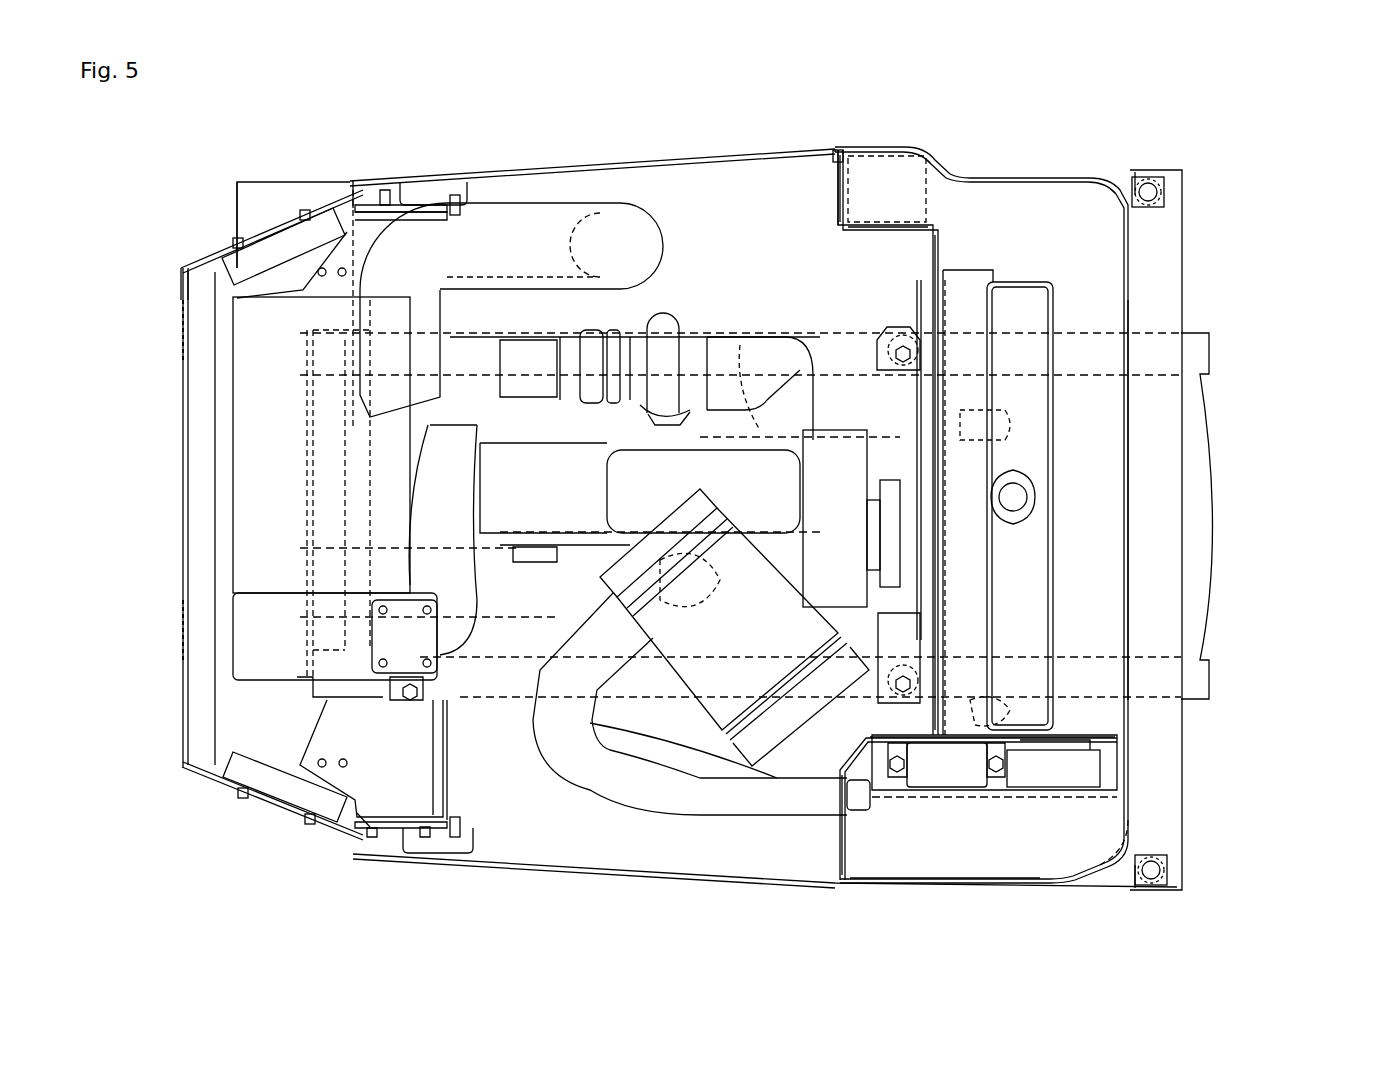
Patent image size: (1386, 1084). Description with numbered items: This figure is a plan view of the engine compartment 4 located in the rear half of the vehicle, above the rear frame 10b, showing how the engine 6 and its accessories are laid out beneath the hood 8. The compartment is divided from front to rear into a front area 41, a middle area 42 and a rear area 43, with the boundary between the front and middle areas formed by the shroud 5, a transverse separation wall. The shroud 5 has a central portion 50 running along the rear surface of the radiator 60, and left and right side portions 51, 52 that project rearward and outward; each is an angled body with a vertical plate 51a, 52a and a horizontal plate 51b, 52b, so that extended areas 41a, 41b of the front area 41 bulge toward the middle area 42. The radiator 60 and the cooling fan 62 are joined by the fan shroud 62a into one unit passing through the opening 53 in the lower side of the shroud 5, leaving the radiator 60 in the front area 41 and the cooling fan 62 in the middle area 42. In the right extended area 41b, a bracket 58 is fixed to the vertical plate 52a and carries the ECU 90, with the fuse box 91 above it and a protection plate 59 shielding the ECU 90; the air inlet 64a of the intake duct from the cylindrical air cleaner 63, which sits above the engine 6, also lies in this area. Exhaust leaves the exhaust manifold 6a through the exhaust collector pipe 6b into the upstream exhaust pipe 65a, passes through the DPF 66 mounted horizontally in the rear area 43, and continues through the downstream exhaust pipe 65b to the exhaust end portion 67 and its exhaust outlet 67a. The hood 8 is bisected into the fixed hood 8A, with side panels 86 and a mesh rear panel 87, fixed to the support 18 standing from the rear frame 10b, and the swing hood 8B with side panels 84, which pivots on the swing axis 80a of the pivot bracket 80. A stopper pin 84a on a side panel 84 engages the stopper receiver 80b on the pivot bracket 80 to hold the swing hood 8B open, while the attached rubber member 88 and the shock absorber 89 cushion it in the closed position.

The engine compartment 4 is at (683, 180).
The shroud 5 is at (960, 225).
The engine 6 is at (838, 430).
The exhaust manifold 6a is at (745, 350).
The exhaust collector pipe 6b is at (675, 320).
The hood 8 is at (940, 98).
The fixed hood 8A is at (178, 258).
The swing hood 8B is at (500, 165).
The rear frame 10b is at (1200, 310).
The support 18 is at (305, 510).
The front area 41 is at (1105, 487).
The extended area 41a is at (912, 200).
The extended area 41b is at (922, 861).
The middle area 42 is at (746, 200).
The rear area 43 is at (283, 735).
The central portion 50 is at (930, 293).
The left side portion 51 is at (836, 203).
The vertical plate 51a is at (878, 232).
The horizontal plate 51b is at (833, 150).
The right side portion 52 is at (840, 870).
The vertical plate 52a is at (880, 733).
The horizontal plate 52b is at (835, 818).
The opening 53 is at (1045, 580).
The bracket 58 is at (1090, 740).
The protection plate 59 is at (1130, 838).
The radiator 60 is at (1040, 305).
The cooling fan 62 is at (1030, 430).
The fan shroud 62a is at (960, 275).
The air cleaner 63 is at (675, 690).
The air inlet 64a is at (875, 800).
The upstream exhaust pipe 65a is at (490, 310).
The downstream exhaust pipe 65b is at (480, 510).
The DPF 66 is at (233, 527).
The exhaust end portion 67 is at (545, 172).
The exhaust outlet 67a is at (235, 210).
The pivot bracket 80 is at (380, 200).
The swing axis 80a is at (425, 190).
The stopper receiver 80b is at (415, 232).
The side panel 84 is at (637, 160).
The stopper pin 84a is at (462, 212).
The side panel 86 is at (285, 215).
The rear panel 87 is at (183, 410).
The attached rubber member 88 is at (1135, 745).
The shock absorber 89 is at (1175, 185).
The ECU 90 is at (1040, 770).
The fuse box 91 is at (935, 775).